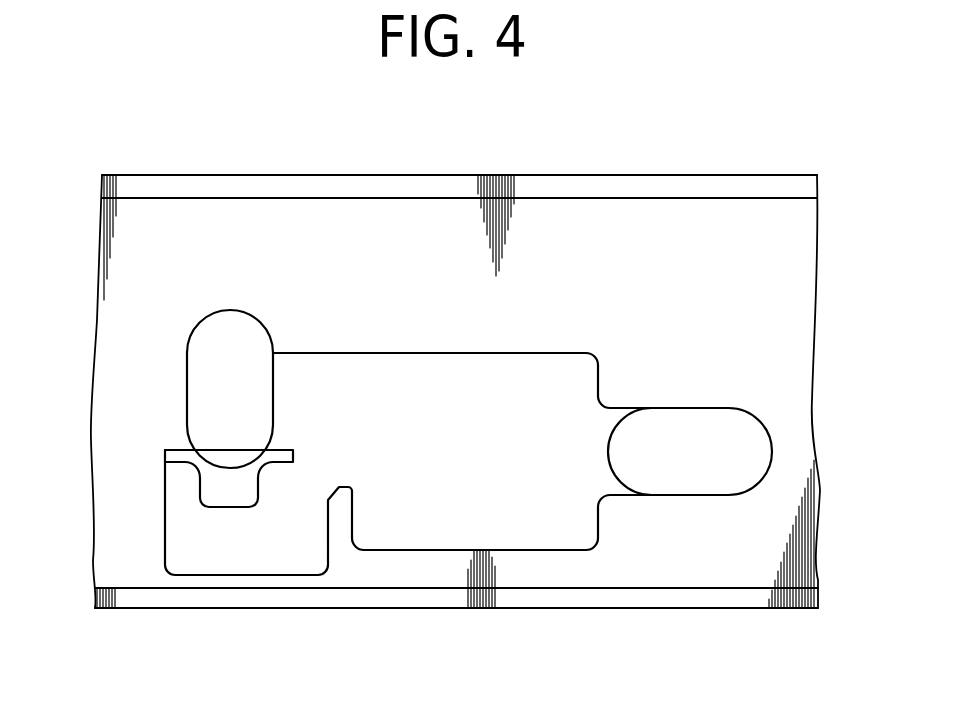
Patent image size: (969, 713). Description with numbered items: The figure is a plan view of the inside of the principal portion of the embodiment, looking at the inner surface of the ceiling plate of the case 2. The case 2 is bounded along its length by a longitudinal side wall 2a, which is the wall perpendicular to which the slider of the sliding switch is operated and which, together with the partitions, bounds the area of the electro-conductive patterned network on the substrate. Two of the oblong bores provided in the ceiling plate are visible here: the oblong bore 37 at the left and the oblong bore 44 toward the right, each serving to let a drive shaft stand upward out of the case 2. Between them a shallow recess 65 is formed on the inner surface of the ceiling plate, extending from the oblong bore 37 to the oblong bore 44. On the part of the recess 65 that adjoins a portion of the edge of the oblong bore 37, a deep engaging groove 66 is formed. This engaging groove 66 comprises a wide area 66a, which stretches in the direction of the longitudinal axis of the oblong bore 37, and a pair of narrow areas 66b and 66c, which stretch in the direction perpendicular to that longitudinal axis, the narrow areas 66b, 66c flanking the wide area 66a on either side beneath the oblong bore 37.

The case 2 is at (733, 176).
The longitudinal side wall of the case 2a is at (618, 175).
The recess 65 is at (400, 353).
The oblong bore 44 is at (747, 428).
The oblong bore 37 is at (197, 367).
The engaging groove 66 is at (199, 568).
The wide area of the engaging groove 66a is at (238, 499).
The narrow area of the engaging groove 66b is at (165, 450).
The narrow area of the engaging groove 66c is at (283, 463).